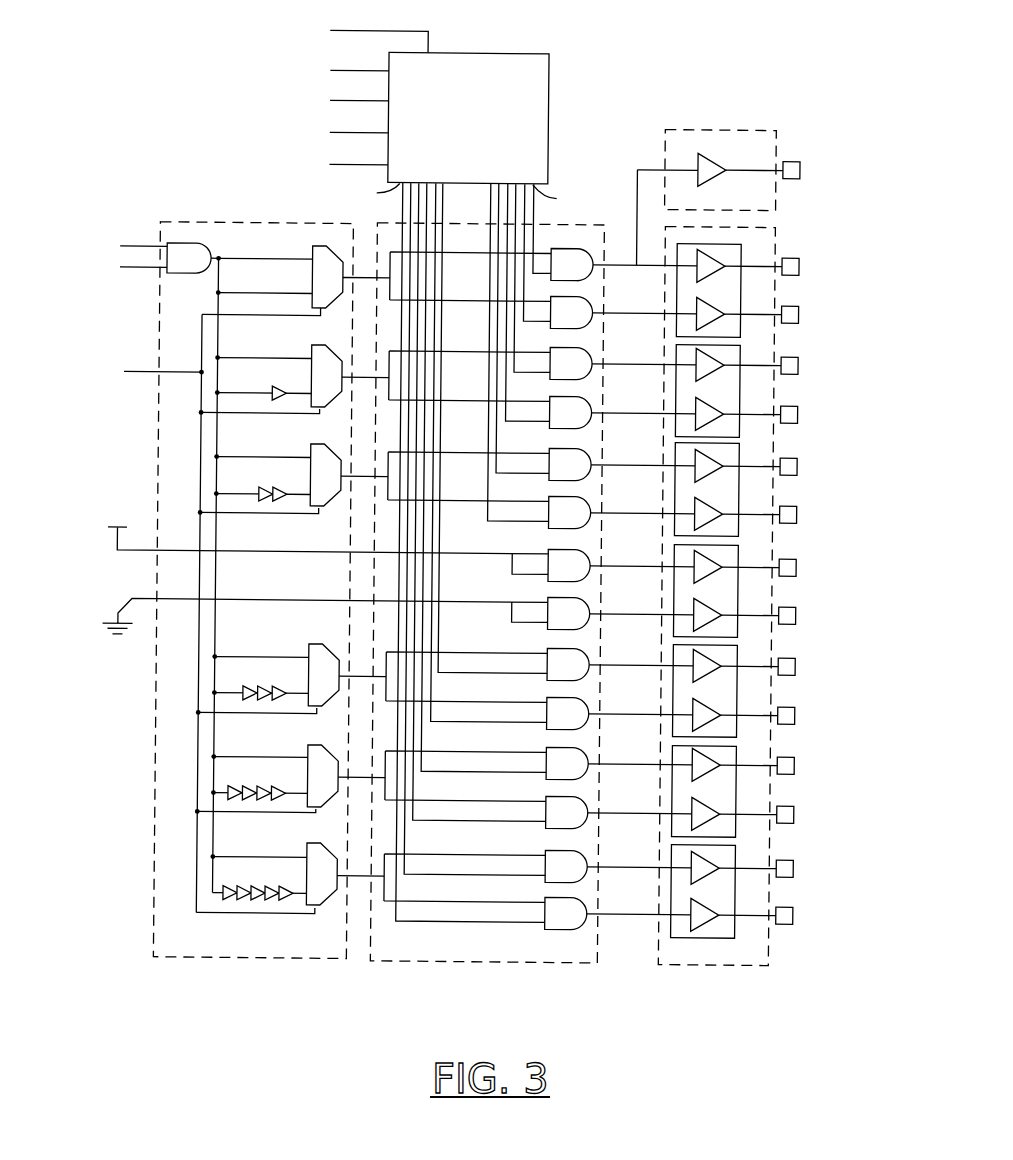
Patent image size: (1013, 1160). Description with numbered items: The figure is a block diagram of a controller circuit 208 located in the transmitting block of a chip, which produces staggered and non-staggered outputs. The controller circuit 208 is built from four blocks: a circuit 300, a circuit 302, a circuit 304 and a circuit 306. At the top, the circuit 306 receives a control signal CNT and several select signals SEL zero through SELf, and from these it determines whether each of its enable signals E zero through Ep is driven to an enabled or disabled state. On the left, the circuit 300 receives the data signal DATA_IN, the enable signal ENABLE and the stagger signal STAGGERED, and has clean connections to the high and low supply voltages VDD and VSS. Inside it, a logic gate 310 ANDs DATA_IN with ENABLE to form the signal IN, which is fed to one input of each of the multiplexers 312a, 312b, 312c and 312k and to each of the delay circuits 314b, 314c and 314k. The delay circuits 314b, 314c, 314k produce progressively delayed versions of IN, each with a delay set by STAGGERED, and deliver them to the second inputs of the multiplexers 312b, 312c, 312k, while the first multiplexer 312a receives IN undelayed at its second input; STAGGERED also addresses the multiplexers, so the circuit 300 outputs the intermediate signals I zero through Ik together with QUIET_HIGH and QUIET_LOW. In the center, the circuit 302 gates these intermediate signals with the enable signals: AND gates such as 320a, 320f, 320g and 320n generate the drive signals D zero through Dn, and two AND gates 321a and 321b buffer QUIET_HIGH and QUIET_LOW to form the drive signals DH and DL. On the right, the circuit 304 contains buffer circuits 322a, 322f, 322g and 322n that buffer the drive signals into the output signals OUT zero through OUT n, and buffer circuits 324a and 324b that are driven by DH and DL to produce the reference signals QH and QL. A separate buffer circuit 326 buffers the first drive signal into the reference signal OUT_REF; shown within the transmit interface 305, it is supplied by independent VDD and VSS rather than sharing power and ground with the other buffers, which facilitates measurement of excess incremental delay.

The controller circuit 208 is at (198, 31).
The circuit or block 306 is at (512, 55).
The circuit or block 300 is at (214, 964).
The logic gate 310 is at (176, 279).
The first multiplexer 312a is at (307, 250).
The multiplexer 312b is at (308, 350).
The multiplexer 312c is at (308, 449).
The multiplexer 312k is at (310, 850).
The delay circuit 314b is at (277, 404).
The delay circuit 314c is at (271, 505).
The delay circuit 314k is at (254, 902).
The circuit or block 302 is at (432, 964).
The logic gate 320a is at (582, 248).
The logic gate 320f is at (556, 497).
The logic gate 320g is at (553, 648).
The logic gate 320n is at (555, 931).
The logic gate 321a is at (553, 546).
The logic gate 321b is at (553, 596).
The circuit or block 304 is at (698, 964).
The transmit interface 305 is at (724, 128).
The buffer circuit 326 is at (702, 154).
The buffer circuit 322a is at (712, 255).
The buffer circuit 322f is at (712, 505).
The buffer circuit 322g is at (711, 659).
The buffer circuit 322n is at (713, 906).
The buffer circuit 324a is at (712, 558).
The buffer circuit 324b is at (710, 607).